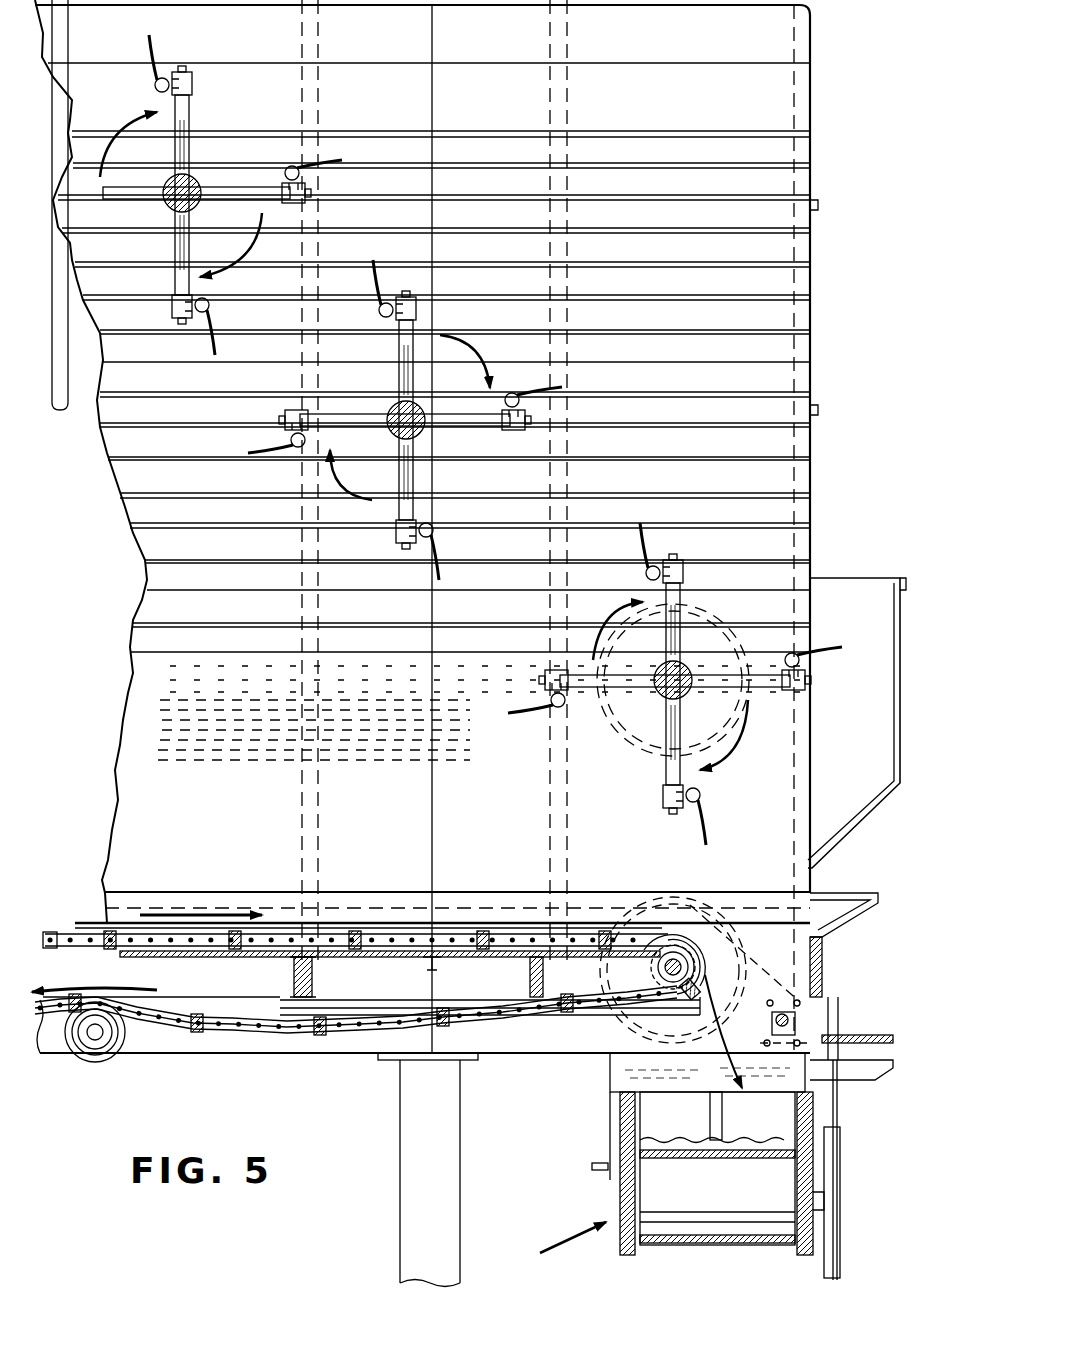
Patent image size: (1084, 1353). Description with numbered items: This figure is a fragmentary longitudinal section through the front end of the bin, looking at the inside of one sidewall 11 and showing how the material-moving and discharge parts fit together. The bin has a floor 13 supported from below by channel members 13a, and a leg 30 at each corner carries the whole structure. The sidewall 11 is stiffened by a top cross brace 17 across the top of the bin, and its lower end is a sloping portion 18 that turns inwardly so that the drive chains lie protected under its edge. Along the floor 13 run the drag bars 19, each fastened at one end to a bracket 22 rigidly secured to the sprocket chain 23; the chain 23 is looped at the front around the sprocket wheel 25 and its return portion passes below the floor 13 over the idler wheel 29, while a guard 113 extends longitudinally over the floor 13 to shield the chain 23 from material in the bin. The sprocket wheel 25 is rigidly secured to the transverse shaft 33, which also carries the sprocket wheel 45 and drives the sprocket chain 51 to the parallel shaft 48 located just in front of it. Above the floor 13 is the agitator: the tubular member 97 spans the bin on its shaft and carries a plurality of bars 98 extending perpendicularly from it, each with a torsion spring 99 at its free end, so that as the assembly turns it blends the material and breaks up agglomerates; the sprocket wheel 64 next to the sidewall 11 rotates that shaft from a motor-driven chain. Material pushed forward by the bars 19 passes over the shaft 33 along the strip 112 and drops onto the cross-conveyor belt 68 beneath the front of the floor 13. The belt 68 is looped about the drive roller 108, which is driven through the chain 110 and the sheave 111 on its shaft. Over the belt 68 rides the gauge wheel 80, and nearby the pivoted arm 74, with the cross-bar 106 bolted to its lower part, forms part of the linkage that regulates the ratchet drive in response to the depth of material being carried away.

The sidewall 11 is at (140, 505).
The top cross brace 17 is at (78, 2).
The sloping portion 18 is at (150, 705).
The floor 13 is at (372, 960).
The channel member 13a is at (292, 976).
The drag bar 19 is at (227, 950).
The bracket 22 is at (478, 932).
The sprocket chain 23 is at (60, 932).
The sprocket wheel 25 is at (656, 973).
The idler wheel 29 is at (93, 1062).
The leg 30 is at (462, 1153).
The shaft 33 is at (699, 963).
The sprocket wheel 45 is at (700, 889).
The shaft 48 is at (770, 1027).
The sprocket chain 51 is at (837, 829).
The sprocket wheel 64 is at (626, 749).
The conveyor belt 68 is at (662, 1181).
The arm 74 is at (604, 1098).
The gauge wheel 80 is at (707, 1113).
The tubular member 97 is at (173, 204).
The bar 98 is at (187, 111).
The torsion spring 99 is at (157, 44).
The cross-bar 106 is at (598, 1168).
The drive roller 108 is at (733, 1193).
The chain 110 is at (838, 1108).
The sheave 111 is at (841, 1170).
The strip 112 is at (657, 937).
The guard 113 is at (355, 930).